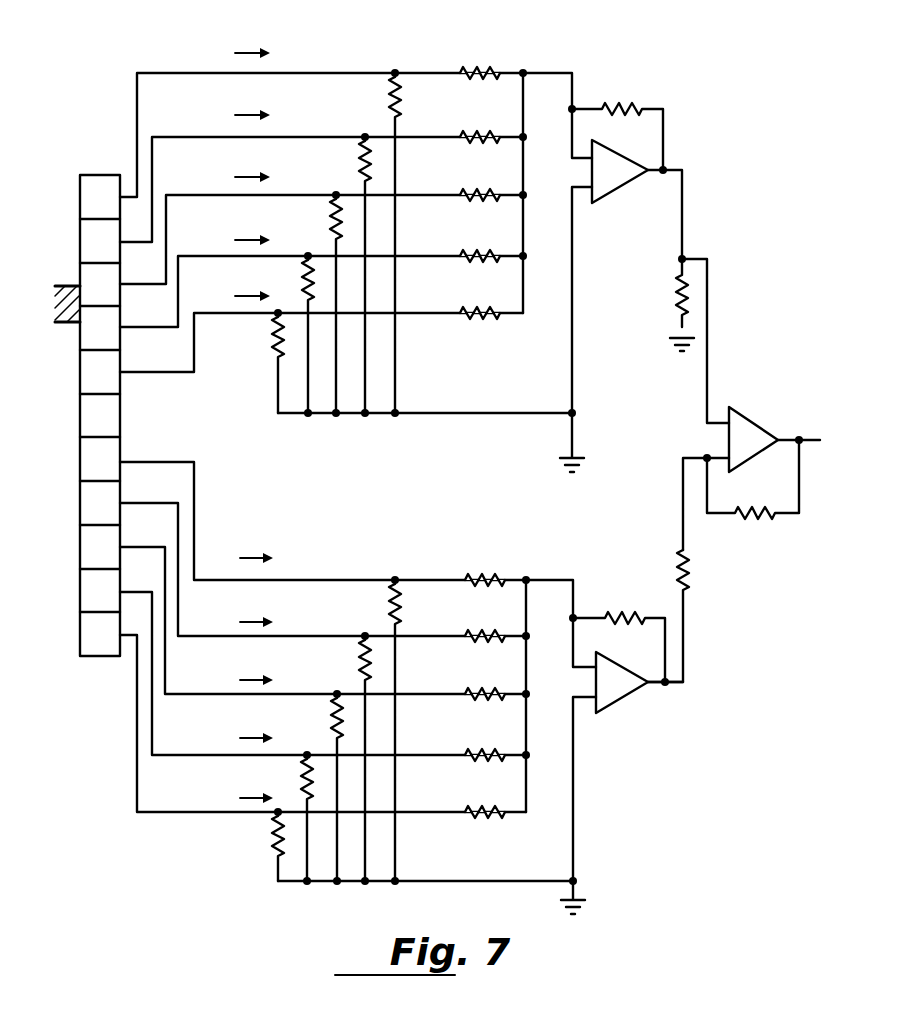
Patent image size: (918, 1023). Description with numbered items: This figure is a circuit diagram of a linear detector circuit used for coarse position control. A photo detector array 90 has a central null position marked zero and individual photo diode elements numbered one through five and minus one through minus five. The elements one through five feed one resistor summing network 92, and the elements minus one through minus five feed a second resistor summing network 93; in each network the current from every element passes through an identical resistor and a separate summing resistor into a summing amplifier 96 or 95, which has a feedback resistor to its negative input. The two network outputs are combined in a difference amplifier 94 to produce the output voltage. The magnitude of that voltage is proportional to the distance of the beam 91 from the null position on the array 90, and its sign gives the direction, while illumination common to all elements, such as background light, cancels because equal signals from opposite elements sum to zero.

The photo detector array 90 is at (97, 175).
The beam 91 is at (70, 286).
The resistor summing network 92 is at (128, 68).
The resistor summing network 93 is at (168, 832).
The difference amplifier 94 is at (750, 430).
The summing amplifier 95 is at (620, 692).
The summing amplifier 96 is at (620, 178).